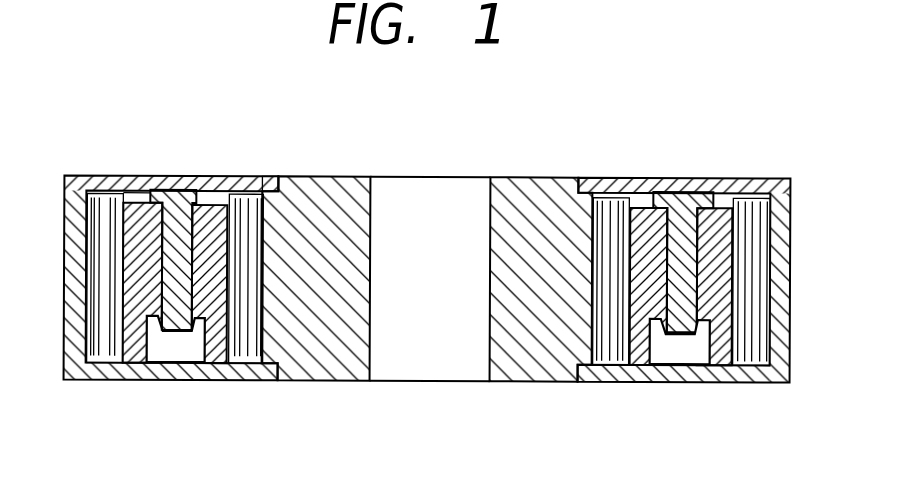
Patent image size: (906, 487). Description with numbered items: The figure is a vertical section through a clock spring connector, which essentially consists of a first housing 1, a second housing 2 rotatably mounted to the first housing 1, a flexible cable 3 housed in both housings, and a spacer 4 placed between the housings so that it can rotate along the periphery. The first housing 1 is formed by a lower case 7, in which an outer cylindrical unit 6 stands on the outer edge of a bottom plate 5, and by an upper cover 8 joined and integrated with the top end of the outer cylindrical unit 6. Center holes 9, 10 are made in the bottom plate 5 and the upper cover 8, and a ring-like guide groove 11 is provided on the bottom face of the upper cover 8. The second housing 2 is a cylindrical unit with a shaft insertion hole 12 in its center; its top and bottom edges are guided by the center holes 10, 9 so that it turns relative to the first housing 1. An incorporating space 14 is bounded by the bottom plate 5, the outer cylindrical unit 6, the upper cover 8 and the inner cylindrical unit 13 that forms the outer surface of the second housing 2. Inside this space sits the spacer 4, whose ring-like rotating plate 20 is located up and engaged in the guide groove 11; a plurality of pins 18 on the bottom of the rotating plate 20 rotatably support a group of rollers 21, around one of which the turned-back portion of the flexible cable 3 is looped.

The first housing 1 is at (827, 132).
The second housing 2 is at (508, 178).
The flexible cable 3 is at (93, 258).
The spacer 4 is at (126, 183).
The bottom plate 5 is at (700, 300).
The outer cylindrical unit 6 is at (75, 221).
The lower case 7 is at (790, 223).
The upper cover 8 is at (762, 190).
The center hole 9 is at (307, 381).
The center hole 10 is at (279, 188).
The guide groove 11 is at (152, 191).
The shaft insertion hole 12 is at (452, 365).
The inner cylindrical unit 13 is at (275, 318).
The incorporating space 14 is at (622, 203).
The pins 18 is at (178, 333).
The rotating plate 20 is at (199, 189).
The rollers 21 is at (716, 308).